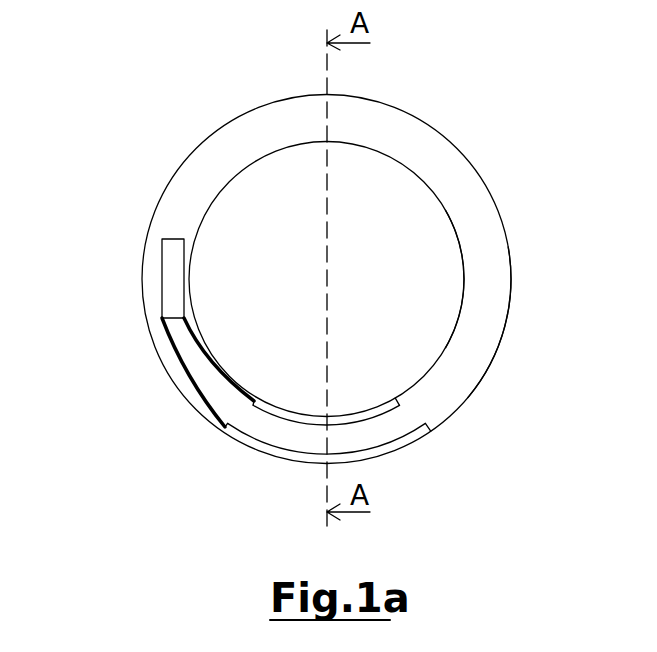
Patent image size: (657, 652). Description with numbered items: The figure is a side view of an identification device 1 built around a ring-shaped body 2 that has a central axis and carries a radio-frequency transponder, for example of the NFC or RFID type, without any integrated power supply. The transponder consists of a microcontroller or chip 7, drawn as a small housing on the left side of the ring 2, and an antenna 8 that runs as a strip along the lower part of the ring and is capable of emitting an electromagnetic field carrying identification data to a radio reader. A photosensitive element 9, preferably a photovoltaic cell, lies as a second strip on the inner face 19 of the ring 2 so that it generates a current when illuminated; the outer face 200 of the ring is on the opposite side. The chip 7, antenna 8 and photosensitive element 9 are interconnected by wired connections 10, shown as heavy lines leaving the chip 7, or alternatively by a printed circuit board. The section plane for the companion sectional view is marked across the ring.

The identification device 1 is at (198, 103).
The ring-shaped body 2 is at (457, 182).
The inner face 19 is at (465, 288).
The outer face 200 is at (497, 350).
The chip 7 is at (177, 297).
The antenna 8 is at (400, 443).
The photosensitive element 9 is at (408, 420).
The wired connections 10 is at (200, 342).